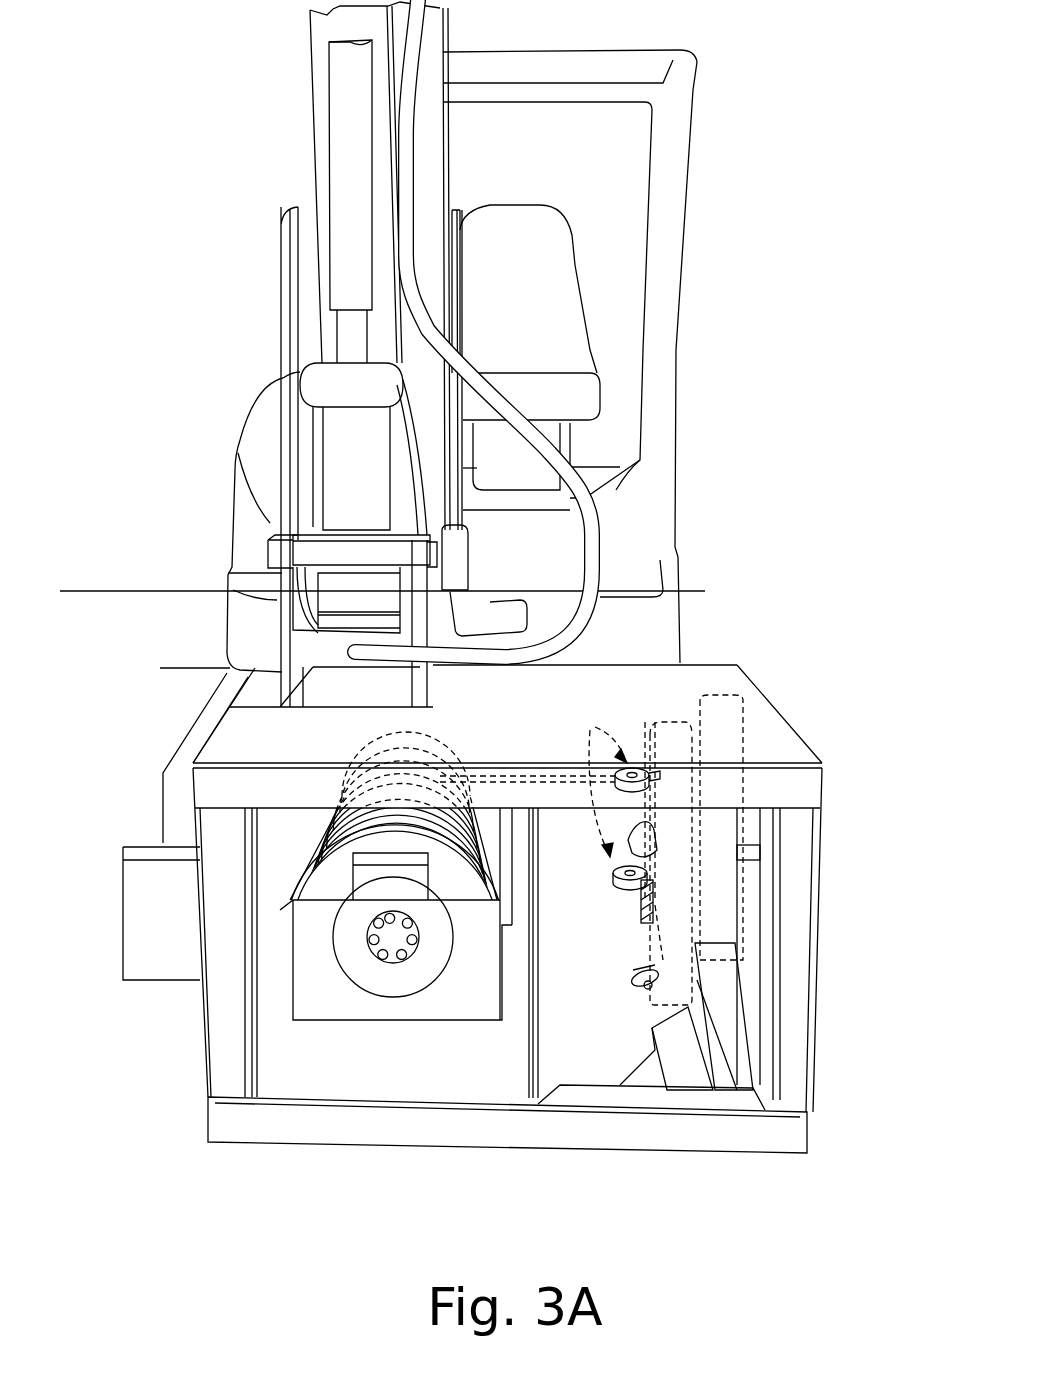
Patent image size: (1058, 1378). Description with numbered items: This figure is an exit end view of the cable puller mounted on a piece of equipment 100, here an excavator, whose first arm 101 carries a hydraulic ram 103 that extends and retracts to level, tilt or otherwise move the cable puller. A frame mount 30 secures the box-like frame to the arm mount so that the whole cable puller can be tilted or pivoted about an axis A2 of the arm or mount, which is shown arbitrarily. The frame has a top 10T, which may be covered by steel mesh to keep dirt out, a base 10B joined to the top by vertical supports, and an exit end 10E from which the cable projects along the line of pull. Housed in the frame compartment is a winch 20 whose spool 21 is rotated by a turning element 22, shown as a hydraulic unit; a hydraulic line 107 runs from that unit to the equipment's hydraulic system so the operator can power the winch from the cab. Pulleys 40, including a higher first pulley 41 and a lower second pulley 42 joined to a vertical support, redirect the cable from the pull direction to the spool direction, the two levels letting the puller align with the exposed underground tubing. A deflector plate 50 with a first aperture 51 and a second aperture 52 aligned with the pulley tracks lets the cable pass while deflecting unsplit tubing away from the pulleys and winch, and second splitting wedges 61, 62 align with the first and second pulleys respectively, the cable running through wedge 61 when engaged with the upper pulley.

The piece of equipment 100 is at (672, 115).
The first arm 101 is at (320, 136).
The ram 103 is at (353, 275).
The hydraulic line 107 is at (597, 547).
The axis of rotation A2 is at (85, 593).
The frame mount 30 is at (273, 672).
The top of the frame 10T is at (765, 723).
The exit end of the frame 10E is at (263, 1115).
The base of the frame 10B is at (767, 1128).
The winch 20 is at (310, 923).
The spool 21 is at (322, 840).
The turning element 22 is at (352, 947).
The pulleys 40 is at (598, 781).
The first pulley 41 is at (663, 773).
The second pulley 42 is at (663, 900).
The deflector plate 50 is at (595, 1030).
The first aperture 51 is at (727, 822).
The second aperture 52 is at (703, 970).
The second splitting wedge 61 is at (660, 847).
The second splitting wedge 62 is at (637, 973).